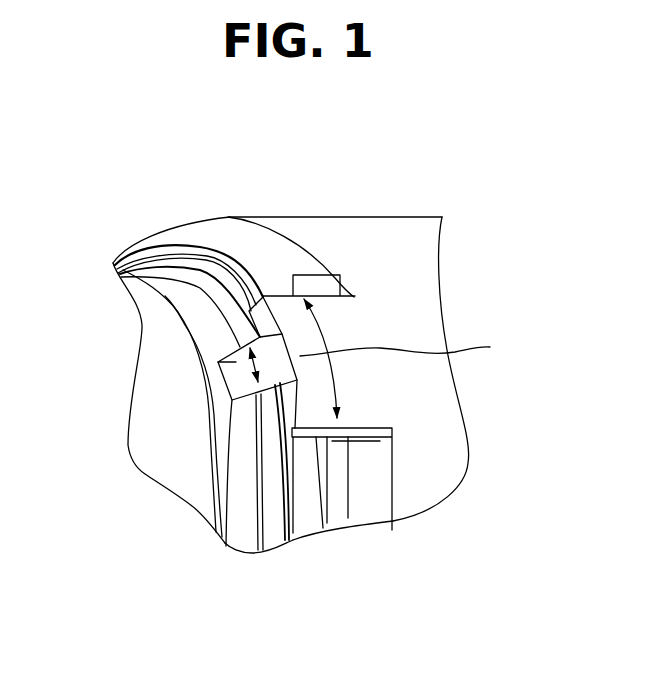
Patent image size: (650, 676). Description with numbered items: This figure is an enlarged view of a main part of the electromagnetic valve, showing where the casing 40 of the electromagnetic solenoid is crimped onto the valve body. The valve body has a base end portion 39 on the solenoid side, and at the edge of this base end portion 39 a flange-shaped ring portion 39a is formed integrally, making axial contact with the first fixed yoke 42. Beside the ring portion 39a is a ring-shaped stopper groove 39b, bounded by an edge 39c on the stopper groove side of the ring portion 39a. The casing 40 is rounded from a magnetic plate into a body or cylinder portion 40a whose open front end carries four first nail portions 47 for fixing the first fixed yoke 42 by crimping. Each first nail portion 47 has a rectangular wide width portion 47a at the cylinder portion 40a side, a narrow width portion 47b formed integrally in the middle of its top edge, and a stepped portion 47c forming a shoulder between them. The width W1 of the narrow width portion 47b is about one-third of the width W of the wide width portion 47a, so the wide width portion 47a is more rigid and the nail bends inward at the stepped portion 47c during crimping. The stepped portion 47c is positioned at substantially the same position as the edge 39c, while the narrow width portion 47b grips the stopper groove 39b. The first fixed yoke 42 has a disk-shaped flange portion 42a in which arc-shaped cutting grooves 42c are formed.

The base end portion 39 is at (127, 246).
The ring portion 39a is at (196, 249).
The stopper groove 39b is at (243, 518).
The edge 39c is at (283, 538).
The casing 40 is at (466, 390).
The cylinder portion 40a is at (420, 230).
The first fixed yoke 42 is at (247, 216).
The flange portion 42a is at (233, 216).
The cutting groove 42c is at (366, 437).
The first nail portion 47 is at (358, 409).
The wide width portion 47a is at (347, 337).
The narrow width portion 47b is at (267, 352).
The stepped portion 47c is at (298, 437).
The width W is at (406, 349).
The width W1 is at (218, 362).